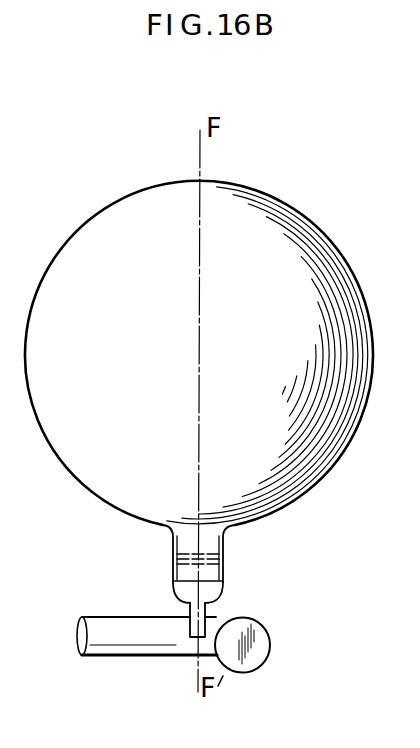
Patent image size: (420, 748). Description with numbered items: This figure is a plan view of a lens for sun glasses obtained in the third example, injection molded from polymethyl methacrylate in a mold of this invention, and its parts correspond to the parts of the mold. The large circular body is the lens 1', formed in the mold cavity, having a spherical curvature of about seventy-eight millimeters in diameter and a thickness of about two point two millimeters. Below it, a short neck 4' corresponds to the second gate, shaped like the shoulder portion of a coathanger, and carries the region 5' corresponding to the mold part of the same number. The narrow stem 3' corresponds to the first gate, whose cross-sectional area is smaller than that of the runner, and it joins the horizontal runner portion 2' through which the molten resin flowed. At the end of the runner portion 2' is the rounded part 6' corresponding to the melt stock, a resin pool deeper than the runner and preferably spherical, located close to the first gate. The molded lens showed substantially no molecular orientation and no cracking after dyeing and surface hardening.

The molded article part corresponding to mold cavity 1' is at (206, 353).
The molded article part corresponding to runner 2' is at (147, 657).
The molded article part corresponding to first gate 3' is at (230, 606).
The molded article part corresponding to second gate 4' is at (187, 564).
The molded article part corresponding to mold part 5 5' is at (223, 560).
The molded article part corresponding to melt stock 6' is at (261, 645).